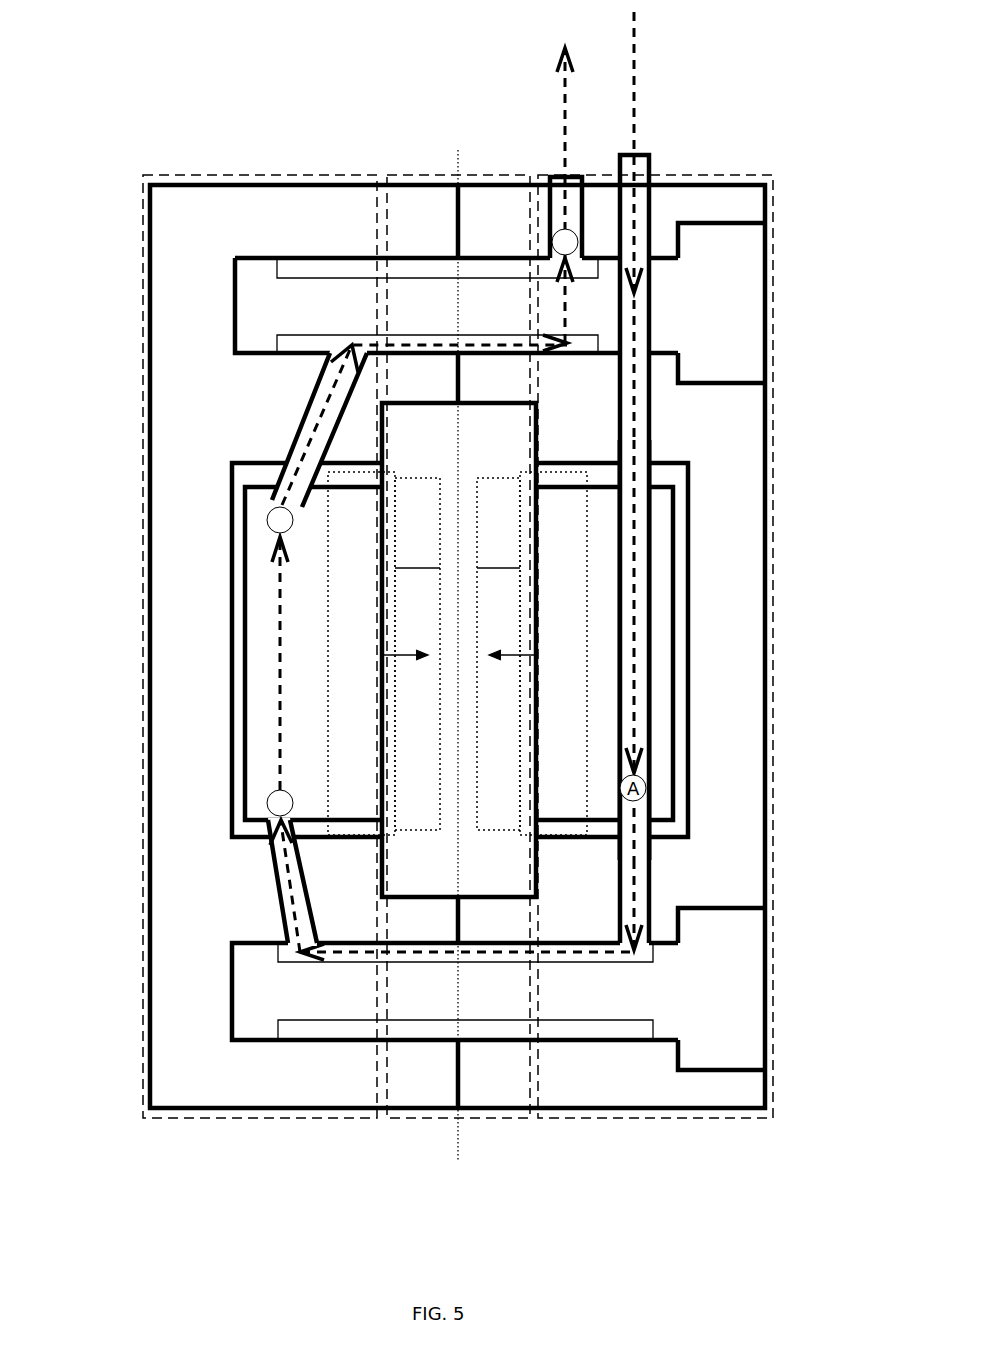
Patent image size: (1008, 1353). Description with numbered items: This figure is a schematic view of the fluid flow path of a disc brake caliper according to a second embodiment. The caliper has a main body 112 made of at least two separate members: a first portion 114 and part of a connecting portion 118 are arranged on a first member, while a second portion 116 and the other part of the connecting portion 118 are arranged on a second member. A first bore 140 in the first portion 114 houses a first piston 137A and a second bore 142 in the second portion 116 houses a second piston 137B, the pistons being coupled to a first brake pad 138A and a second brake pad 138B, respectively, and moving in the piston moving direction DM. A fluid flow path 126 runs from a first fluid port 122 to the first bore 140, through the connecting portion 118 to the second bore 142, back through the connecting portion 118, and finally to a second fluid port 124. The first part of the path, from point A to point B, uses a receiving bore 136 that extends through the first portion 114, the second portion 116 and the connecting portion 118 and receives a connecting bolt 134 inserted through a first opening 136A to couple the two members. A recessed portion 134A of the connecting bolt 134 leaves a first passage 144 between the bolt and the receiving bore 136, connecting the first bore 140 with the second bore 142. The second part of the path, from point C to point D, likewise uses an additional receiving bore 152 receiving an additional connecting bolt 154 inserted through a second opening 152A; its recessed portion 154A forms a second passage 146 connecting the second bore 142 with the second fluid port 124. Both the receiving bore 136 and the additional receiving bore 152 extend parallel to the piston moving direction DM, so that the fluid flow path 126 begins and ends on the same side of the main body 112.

The main body 112 is at (316, 20).
The first portion 114 is at (778, 172).
The second portion 116 is at (243, 173).
The connecting portion 118 is at (452, 173).
The first fluid port 122 is at (650, 156).
The second fluid port 124 is at (552, 176).
The fluid flow path 126 is at (636, 95).
The connecting bolt 134 is at (258, 995).
The recessed portion 134A is at (485, 1040).
The receiving bore 136 is at (565, 1040).
The first opening 136A is at (708, 1070).
The first piston 137A is at (587, 537).
The second piston 137B is at (328, 578).
The first brake pad 138A is at (506, 654).
The second brake pad 138B is at (459, 650).
The first bore 140 is at (675, 663).
The second bore 142 is at (240, 665).
The first passage 144 is at (292, 957).
The second passage 146 is at (290, 345).
The additional receiving bore 152 is at (378, 250).
The second opening 152A is at (708, 383).
The additional connecting bolt 154 is at (258, 297).
The recessed portion 154A is at (308, 273).